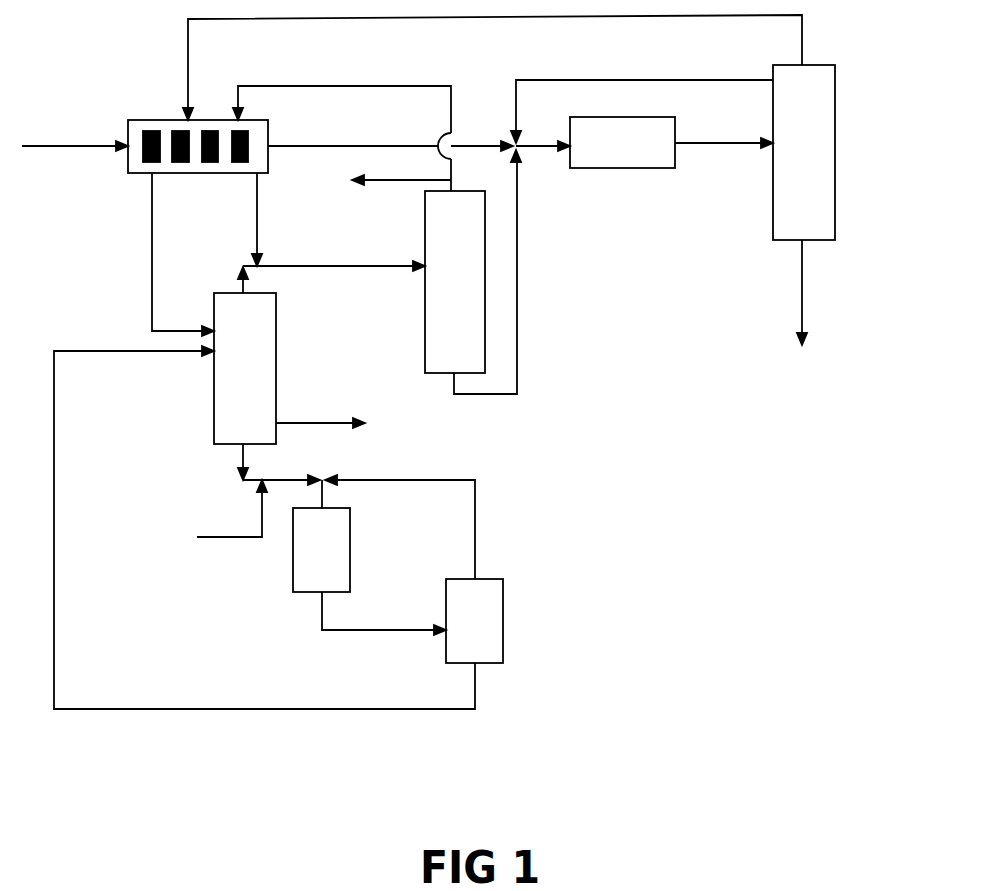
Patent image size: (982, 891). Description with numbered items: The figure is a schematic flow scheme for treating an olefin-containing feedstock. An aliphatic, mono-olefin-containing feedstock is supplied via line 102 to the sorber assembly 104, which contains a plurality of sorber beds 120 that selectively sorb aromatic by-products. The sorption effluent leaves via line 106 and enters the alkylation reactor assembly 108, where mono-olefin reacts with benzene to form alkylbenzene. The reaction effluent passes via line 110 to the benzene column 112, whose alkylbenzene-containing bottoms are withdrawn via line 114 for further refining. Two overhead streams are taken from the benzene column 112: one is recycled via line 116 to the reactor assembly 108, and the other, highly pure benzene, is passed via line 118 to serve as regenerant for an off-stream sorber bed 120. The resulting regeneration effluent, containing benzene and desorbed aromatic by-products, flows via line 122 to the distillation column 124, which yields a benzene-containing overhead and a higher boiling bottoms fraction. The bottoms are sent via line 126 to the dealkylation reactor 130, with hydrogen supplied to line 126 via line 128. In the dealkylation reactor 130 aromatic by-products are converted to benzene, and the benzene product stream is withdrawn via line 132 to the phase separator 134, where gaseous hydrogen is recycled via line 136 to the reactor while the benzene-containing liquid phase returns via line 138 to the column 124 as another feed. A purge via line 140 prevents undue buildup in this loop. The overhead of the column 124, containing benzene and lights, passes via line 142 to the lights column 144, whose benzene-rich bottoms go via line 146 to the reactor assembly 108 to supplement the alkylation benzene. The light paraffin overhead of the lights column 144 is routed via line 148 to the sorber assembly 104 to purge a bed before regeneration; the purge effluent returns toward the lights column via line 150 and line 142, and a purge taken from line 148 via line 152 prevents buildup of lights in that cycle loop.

The line 102 is at (51, 146).
The sorber assembly 104 is at (165, 120).
The line 106 is at (293, 146).
The alkylation reactor assembly 108 is at (646, 157).
The line 110 is at (700, 140).
The benzene column 112 is at (826, 152).
The line 114 is at (802, 260).
The line 116 is at (642, 80).
The line 118 is at (804, 53).
The sorber beds 120 is at (147, 155).
The line 122 is at (148, 242).
The distillation column 124 is at (268, 385).
The line 126 is at (240, 465).
The line 128 is at (223, 535).
The dealkylation reactor 130 is at (346, 567).
The line 132 is at (318, 617).
The phase separator 134 is at (497, 630).
The line 136 is at (477, 522).
The line 138 is at (56, 671).
The line 140 is at (297, 423).
The line 142 is at (395, 265).
The lights column 144 is at (479, 308).
The line 146 is at (517, 350).
The line 148 is at (398, 82).
The line 150 is at (255, 203).
The line 152 is at (407, 182).